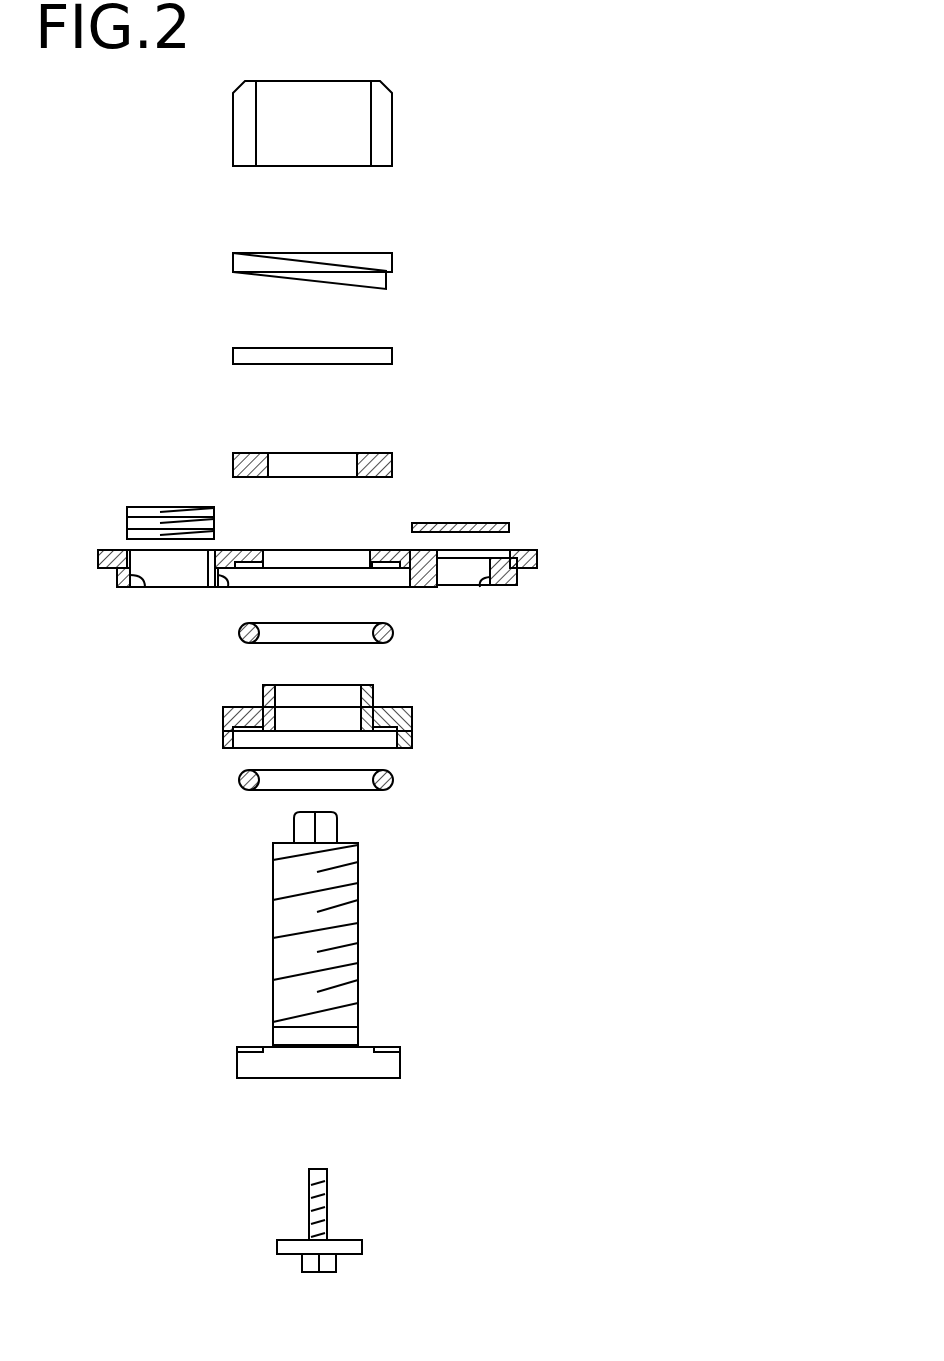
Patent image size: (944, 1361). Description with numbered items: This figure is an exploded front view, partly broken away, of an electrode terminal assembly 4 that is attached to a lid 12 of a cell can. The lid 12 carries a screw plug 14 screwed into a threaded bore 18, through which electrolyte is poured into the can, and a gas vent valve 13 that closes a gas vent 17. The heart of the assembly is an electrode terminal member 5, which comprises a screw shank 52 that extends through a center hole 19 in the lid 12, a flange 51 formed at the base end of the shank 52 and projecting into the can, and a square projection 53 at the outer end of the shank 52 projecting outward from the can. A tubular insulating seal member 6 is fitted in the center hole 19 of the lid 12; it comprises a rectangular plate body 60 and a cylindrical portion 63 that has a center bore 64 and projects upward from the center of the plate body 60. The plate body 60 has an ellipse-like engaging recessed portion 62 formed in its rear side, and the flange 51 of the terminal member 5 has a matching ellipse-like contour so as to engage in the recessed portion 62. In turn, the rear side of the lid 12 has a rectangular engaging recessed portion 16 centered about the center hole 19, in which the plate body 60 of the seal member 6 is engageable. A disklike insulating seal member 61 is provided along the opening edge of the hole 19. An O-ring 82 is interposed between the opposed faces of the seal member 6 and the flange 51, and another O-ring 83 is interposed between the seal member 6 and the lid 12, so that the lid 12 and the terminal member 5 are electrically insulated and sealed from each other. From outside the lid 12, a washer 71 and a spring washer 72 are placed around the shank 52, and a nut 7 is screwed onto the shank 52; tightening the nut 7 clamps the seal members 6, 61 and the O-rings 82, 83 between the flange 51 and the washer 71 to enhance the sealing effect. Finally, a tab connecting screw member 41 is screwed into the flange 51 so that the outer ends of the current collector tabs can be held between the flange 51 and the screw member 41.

The electrode terminal assembly 4 is at (612, 208).
The nut 7 is at (380, 140).
The spring washer 72 is at (382, 266).
The washer 71 is at (382, 357).
The disklike insulating seal member 61 is at (392, 465).
The screw plug 14 is at (180, 512).
The gas vent valve 13 is at (495, 522).
The lid 12 is at (523, 550).
The center hole 19 is at (283, 557).
The threaded bore 18 is at (145, 578).
The engaging recessed portion 16 is at (228, 578).
The gas vent 17 is at (480, 578).
The O-ring 83 is at (392, 628).
The tubular insulating seal member 6 is at (329, 730).
The plate body 60 is at (222, 726).
The cylindrical portion 63 is at (376, 691).
The center bore 64 is at (285, 690).
The engaging recessed portion 62 is at (238, 750).
The O-ring 82 is at (393, 785).
The electrode terminal member 5 is at (338, 946).
The square projection 53 is at (293, 830).
The screw shank 52 is at (358, 910).
The flange 51 is at (390, 1070).
The tab connecting screw member 41 is at (327, 1212).